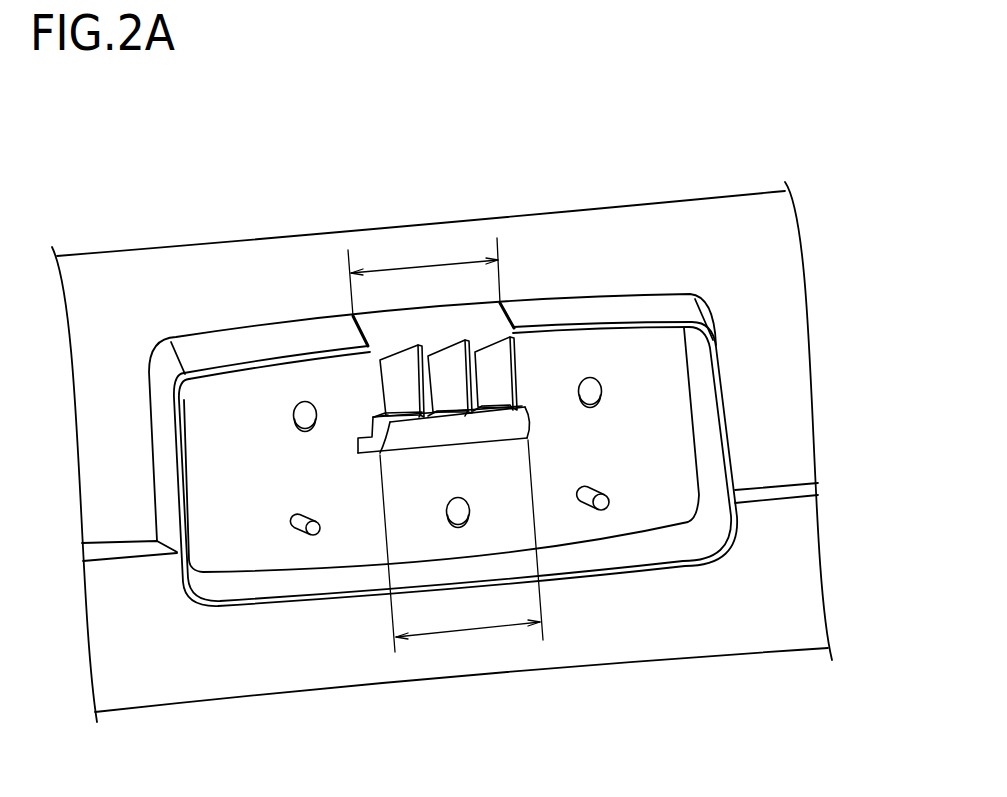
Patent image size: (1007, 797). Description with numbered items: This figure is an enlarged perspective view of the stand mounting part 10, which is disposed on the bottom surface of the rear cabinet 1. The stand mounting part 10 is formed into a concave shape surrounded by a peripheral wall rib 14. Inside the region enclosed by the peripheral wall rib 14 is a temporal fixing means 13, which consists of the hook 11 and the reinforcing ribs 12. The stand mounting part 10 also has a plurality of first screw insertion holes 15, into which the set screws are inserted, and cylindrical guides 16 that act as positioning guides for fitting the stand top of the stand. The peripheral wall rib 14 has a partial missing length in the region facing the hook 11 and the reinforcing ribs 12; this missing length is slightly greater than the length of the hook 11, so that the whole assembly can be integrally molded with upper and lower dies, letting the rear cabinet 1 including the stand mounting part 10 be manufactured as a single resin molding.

The rear cabinet 1 is at (735, 307).
The stand mounting part 10 is at (705, 273).
The hook 11 is at (523, 423).
The reinforcing rib 12 is at (514, 327).
The temporal fixing means 13 is at (707, 133).
The peripheral wall rib 14 is at (273, 336).
The first screw insertion holes 15 is at (588, 407).
The cylindrical guides 16 is at (601, 512).